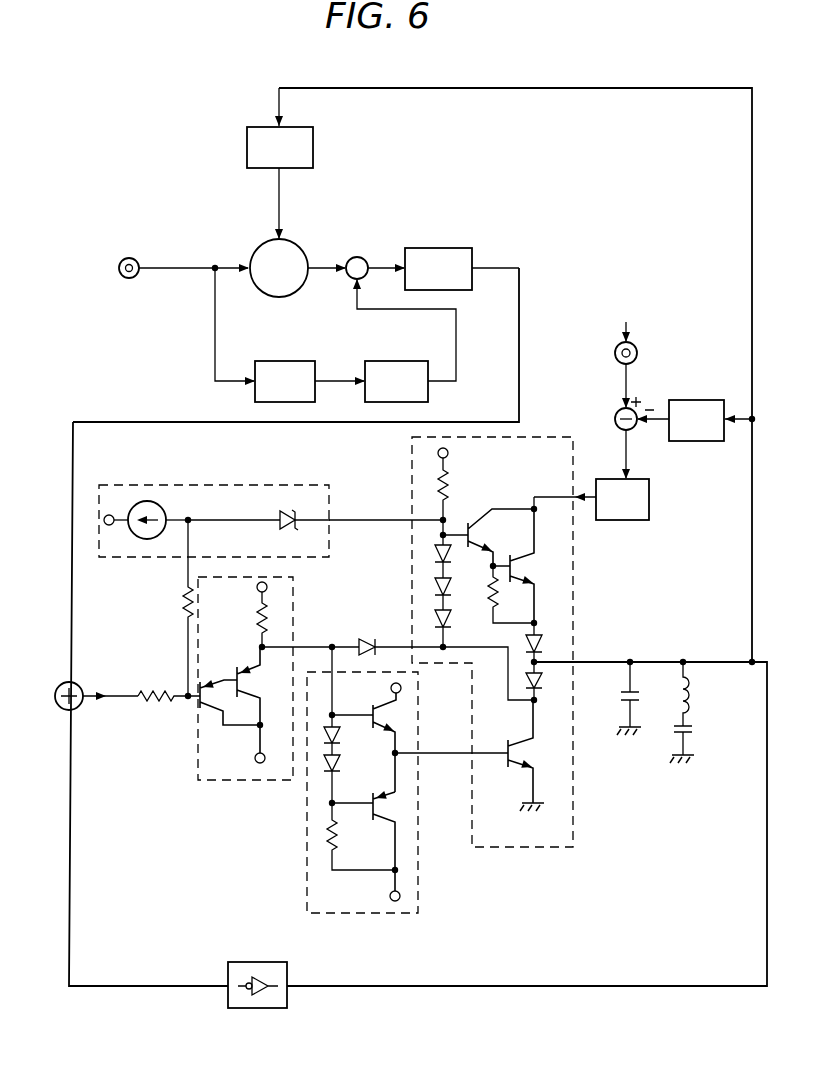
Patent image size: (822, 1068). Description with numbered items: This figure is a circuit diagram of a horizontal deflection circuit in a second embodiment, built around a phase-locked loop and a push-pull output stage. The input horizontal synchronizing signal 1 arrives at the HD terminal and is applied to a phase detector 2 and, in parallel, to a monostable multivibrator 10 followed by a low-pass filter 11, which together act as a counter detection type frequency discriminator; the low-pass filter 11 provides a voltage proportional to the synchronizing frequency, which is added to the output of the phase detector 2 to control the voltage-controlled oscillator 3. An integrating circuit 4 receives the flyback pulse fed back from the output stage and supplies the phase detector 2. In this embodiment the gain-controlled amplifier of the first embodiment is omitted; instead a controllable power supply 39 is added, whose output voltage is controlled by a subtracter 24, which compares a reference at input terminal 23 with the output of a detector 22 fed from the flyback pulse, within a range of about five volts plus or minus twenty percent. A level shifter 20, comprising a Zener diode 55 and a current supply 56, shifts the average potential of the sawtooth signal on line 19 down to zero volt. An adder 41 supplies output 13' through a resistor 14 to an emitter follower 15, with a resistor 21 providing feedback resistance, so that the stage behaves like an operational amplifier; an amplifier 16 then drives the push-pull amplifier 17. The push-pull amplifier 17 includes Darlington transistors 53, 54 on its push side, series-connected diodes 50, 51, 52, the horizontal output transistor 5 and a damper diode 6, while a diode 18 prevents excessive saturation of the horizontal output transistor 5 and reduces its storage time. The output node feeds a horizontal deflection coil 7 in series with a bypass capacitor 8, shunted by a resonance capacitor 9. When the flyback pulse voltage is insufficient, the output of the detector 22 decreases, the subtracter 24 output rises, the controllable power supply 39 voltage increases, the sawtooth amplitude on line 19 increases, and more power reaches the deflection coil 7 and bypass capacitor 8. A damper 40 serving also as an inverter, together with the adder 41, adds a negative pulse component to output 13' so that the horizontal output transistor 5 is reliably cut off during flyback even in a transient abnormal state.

The input horizontal synchronizing signal 1 is at (177, 263).
The phase detector 2 is at (303, 246).
The voltage-controlled oscillator 3 is at (463, 249).
The integrating circuit 4 is at (313, 147).
The horizontal output transistor 5 is at (537, 753).
The damper diode 6 is at (540, 641).
The horizontal deflection coil 7 is at (695, 698).
The bypass capacitor 8 is at (697, 731).
The resonance capacitor 9 is at (618, 698).
The monostable multivibrator 10 is at (297, 361).
The low-pass filter 11 is at (412, 361).
The output of the adder 13' is at (110, 674).
The resistor 14 is at (156, 688).
The emitter follower 15 is at (247, 782).
The amplifier 16 is at (370, 914).
The push-pull amplifier 17 is at (492, 642).
The diode 18 is at (361, 644).
The line 19 is at (368, 518).
The level shifter 20 is at (217, 501).
The resistor 21 is at (181, 602).
The detector 22 is at (701, 400).
The input terminal 23 is at (638, 351).
The subtracter 24 is at (613, 418).
The controllable power supply 39 is at (649, 490).
The damper 40 is at (268, 961).
The adder 41 is at (79, 708).
The diode 50 is at (452, 555).
The diode 51 is at (452, 588).
The diode 52 is at (452, 620).
The Darlington transistor 53 is at (477, 520).
The Darlington transistor 54 is at (516, 549).
The Zener diode 55 is at (284, 529).
The current supply 56 is at (163, 507).